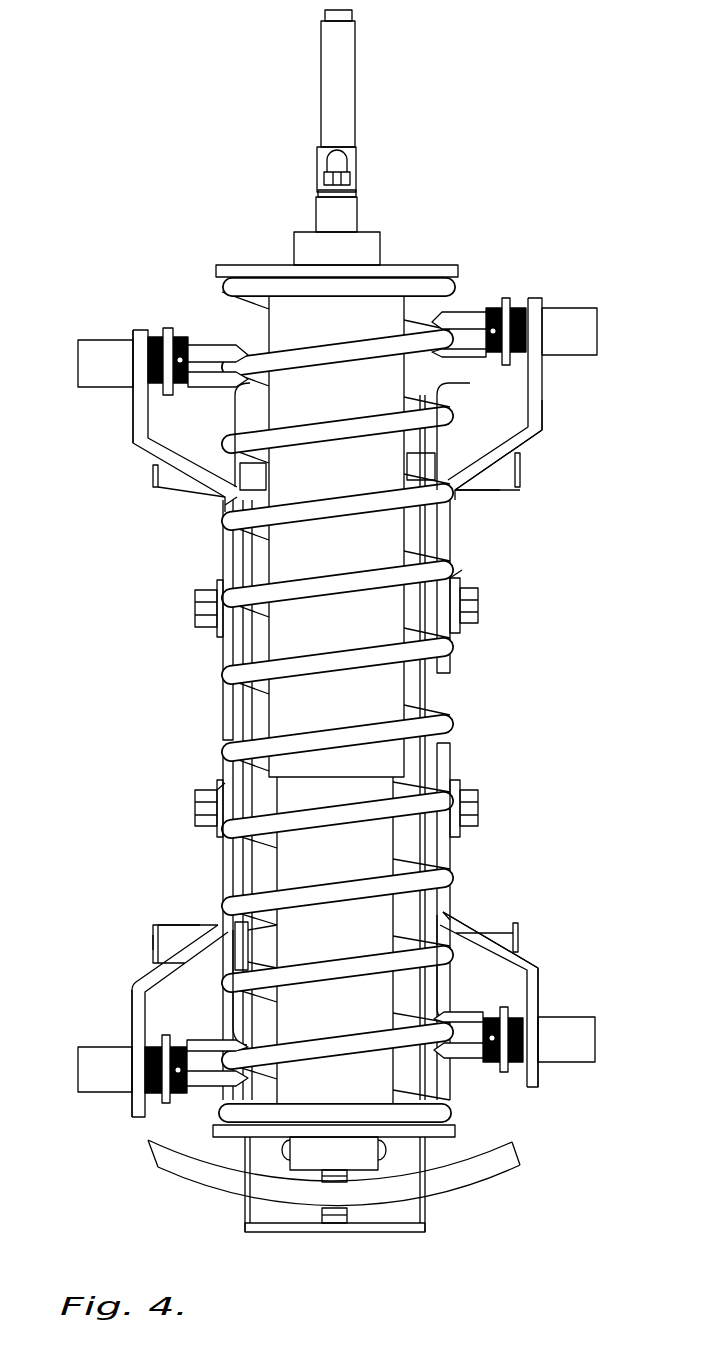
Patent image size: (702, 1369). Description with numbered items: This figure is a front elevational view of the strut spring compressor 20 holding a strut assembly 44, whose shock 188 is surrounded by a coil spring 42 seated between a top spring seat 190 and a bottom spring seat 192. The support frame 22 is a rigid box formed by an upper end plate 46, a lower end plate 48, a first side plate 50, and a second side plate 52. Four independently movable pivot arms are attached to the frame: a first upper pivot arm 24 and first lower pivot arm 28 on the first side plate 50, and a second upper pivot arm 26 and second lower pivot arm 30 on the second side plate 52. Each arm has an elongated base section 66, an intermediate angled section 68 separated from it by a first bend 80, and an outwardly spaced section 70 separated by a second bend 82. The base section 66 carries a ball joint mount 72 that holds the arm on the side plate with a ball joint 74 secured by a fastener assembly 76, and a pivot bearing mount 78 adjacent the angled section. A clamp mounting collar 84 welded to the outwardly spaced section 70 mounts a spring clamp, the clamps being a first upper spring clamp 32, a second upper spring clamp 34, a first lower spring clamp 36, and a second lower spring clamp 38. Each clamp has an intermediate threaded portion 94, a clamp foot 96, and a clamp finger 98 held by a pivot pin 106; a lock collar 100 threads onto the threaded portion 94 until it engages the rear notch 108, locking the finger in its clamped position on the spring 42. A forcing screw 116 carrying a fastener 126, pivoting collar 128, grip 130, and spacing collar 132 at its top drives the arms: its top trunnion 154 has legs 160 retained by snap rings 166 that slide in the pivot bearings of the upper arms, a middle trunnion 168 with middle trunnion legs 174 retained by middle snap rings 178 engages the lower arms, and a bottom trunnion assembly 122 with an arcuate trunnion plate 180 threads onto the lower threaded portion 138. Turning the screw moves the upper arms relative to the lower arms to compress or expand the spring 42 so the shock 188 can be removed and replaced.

The strut spring compressor 20 is at (614, 272).
The support frame 22 is at (226, 711).
The first upper pivot arm 24 is at (118, 447).
The second upper pivot arm 26 is at (540, 410).
The first lower pivot arm 28 is at (135, 988).
The second lower pivot arm 30 is at (540, 985).
The first upper spring clamp 32 is at (117, 303).
The second upper spring clamp 34 is at (531, 280).
The first lower spring clamp 36 is at (130, 1139).
The second lower spring clamp 38 is at (538, 1109).
The spring 42 is at (438, 727).
The strut assembly 44 is at (410, 691).
The upper end plate 46 is at (412, 527).
The lower end plate 48 is at (415, 1235).
The first side plate 50 is at (243, 557).
The second side plate 52 is at (430, 770).
The elongated base section 66 is at (445, 500).
The intermediate angled section 68 is at (172, 440).
The outwardly spaced section 70 is at (140, 340).
The ball joint mount 72 is at (203, 583).
The ball joint 74 is at (462, 585).
The fastener assembly 76 is at (492, 607).
The pivot bearing mount 78 is at (440, 468).
The first bend 80 is at (222, 505).
The second bend 82 is at (540, 436).
The clamp mounting collar 84 is at (582, 340).
The intermediate threaded portion 94 is at (165, 398).
The clamp foot 96 is at (462, 357).
The clamp finger 98 is at (232, 347).
The lock collar 100 is at (168, 328).
The pivot pin 106 is at (182, 395).
The rear notch 108 is at (510, 348).
The forcing screw 116 is at (317, 1191).
The bottom trunnion assembly 122 is at (513, 1247).
The fastener 126 is at (341, 157).
The pivoting collar 128 is at (344, 78).
The grip 130 is at (343, 15).
The spacing collar 132 is at (345, 213).
The lower threaded portion 138 is at (330, 1224).
The top trunnion 154 is at (545, 472).
The legs 160 is at (493, 503).
The snap rings 166 is at (156, 488).
The middle trunnion 168 is at (138, 949).
The middle trunnion legs 174 is at (172, 912).
The middle snap rings 178 is at (153, 928).
The arcuate trunnion plate 180 is at (498, 1162).
The shock 188 is at (356, 636).
The top spring seat 190 is at (270, 265).
The bottom spring seat 192 is at (225, 1132).